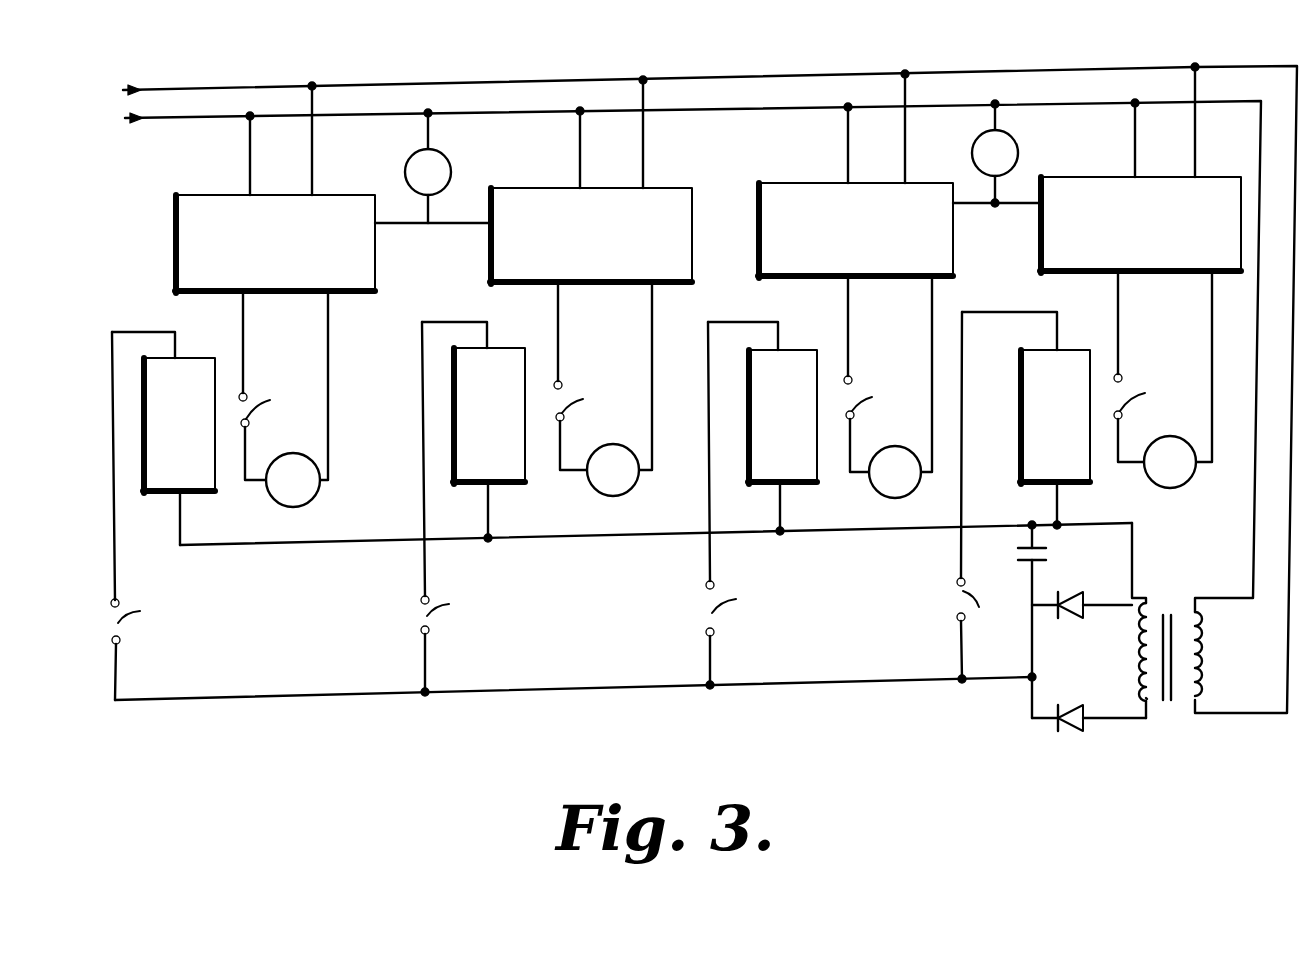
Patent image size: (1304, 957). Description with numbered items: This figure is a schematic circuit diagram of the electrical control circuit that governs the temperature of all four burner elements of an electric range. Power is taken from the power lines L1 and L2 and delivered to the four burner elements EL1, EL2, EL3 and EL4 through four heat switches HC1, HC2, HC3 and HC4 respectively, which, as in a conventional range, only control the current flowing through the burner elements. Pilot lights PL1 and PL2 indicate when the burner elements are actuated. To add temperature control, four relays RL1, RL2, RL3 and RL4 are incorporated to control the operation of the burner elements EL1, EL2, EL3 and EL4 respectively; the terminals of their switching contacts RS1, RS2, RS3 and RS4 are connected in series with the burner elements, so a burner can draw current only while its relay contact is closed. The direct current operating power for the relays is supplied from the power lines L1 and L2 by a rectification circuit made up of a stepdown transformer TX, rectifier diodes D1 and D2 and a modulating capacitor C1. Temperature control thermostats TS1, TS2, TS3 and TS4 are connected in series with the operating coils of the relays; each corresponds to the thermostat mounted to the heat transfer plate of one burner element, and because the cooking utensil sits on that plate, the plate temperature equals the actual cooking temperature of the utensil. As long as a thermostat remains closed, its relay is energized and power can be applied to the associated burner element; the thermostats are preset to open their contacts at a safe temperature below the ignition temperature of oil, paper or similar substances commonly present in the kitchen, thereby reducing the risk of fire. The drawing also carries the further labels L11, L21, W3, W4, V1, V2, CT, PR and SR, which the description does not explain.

The power line L1 is at (197, 121).
The power line L2 is at (180, 82).
The branch line from L1 L11 is at (250, 193).
The branch line from L2 L21 is at (312, 194).
The heat switch HC1 is at (275, 244).
The heat switch HC2 is at (591, 236).
The heat switch HC3 is at (855, 230).
The heat switch HC4 is at (1140, 225).
The pilot light PL1 is at (412, 177).
The pilot light PL2 is at (975, 160).
The switching contact RS1 is at (283, 359).
The switching contact RS2 is at (592, 352).
The switching contact RS3 is at (880, 348).
The switching contact RS4 is at (1154, 345).
The relay RL1 is at (163, 438).
The relay RL2 is at (473, 429).
The relay RL3 is at (762, 425).
The relay RL4 is at (1026, 417).
The burner element EL1 is at (310, 497).
The burner element EL2 is at (597, 477).
The burner element EL3 is at (877, 481).
The burner element EL4 is at (1188, 471).
The temperature control thermostat TS1 is at (152, 620).
The temperature control thermostat TS2 is at (462, 507).
The temperature control thermostat TS3 is at (747, 503).
The temperature control thermostat TS4 is at (995, 495).
The wire 3 W3 is at (114, 552).
The wire 4 W4 is at (115, 668).
The voltage line 1 V1 is at (735, 687).
The voltage line 2 V2 is at (681, 537).
The modulating capacitor C1 is at (1060, 536).
The rectifier diode D1 is at (1094, 591).
The rectifier diode D2 is at (1075, 733).
The stepdown transformer TX is at (1166, 611).
The center-tapped secondary winding CT is at (1136, 666).
The primary winding PR is at (1206, 664).
The secondary winding SR is at (1150, 701).